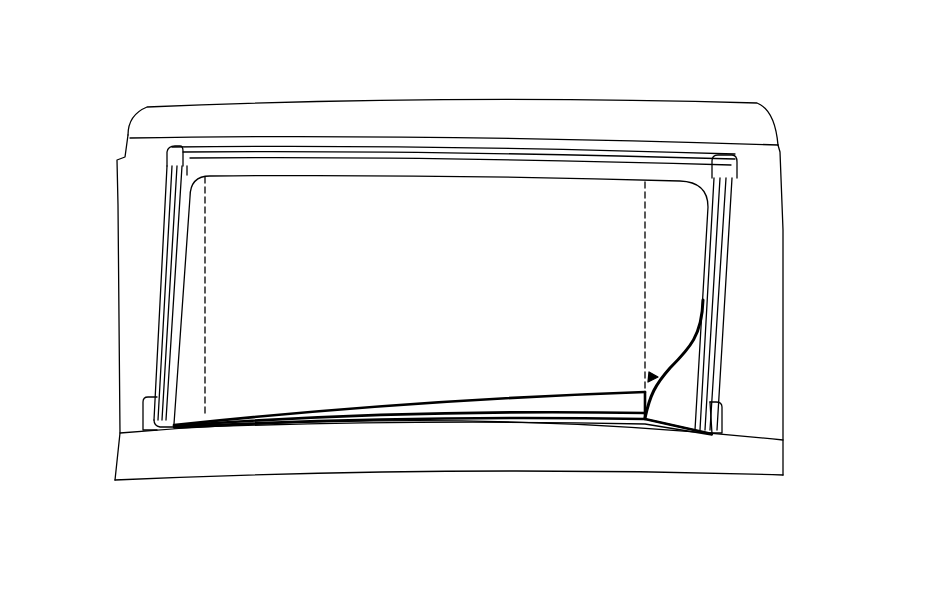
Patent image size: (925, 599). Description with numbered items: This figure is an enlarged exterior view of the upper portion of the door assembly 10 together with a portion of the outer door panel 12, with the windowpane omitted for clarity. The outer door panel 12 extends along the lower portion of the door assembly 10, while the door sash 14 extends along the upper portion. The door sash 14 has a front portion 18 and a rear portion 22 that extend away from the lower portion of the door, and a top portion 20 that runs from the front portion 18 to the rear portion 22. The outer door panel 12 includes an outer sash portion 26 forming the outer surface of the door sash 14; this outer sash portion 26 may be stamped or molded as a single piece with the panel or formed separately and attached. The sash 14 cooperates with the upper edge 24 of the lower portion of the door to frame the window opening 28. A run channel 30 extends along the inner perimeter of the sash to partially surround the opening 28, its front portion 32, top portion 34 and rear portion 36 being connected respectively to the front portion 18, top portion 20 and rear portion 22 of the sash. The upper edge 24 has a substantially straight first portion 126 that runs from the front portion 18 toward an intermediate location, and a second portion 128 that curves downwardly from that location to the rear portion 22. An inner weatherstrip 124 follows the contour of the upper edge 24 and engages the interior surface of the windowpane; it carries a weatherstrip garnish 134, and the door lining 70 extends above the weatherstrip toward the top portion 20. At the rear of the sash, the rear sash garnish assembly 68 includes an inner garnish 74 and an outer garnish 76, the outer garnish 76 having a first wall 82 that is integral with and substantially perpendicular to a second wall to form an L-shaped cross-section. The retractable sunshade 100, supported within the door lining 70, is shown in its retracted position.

The door assembly 10 is at (690, 83).
The outer door panel 12 is at (192, 482).
The door sash 14 is at (785, 202).
The front portion 18 is at (120, 318).
The top portion 20 is at (253, 103).
The rear portion 22 is at (786, 312).
The upper edge 24 is at (401, 419).
The outer sash portion 26 is at (444, 249).
The opening 28 is at (433, 287).
The run channel 30 is at (440, 289).
The front portion 32 is at (183, 303).
The top portion 34 is at (333, 181).
The rear portion 36 is at (702, 253).
The rear sash garnish assembly 68 is at (650, 377).
The door lining 70 is at (510, 397).
The inner garnish 74 is at (663, 357).
The outer garnish 76 is at (677, 454).
The first wall 82 is at (670, 401).
The retractable sunshade 100 is at (207, 253).
The inner weatherstrip 124 is at (550, 398).
The first portion 126 is at (268, 428).
The second portion 128 is at (585, 416).
The weatherstrip garnish 134 is at (607, 400).